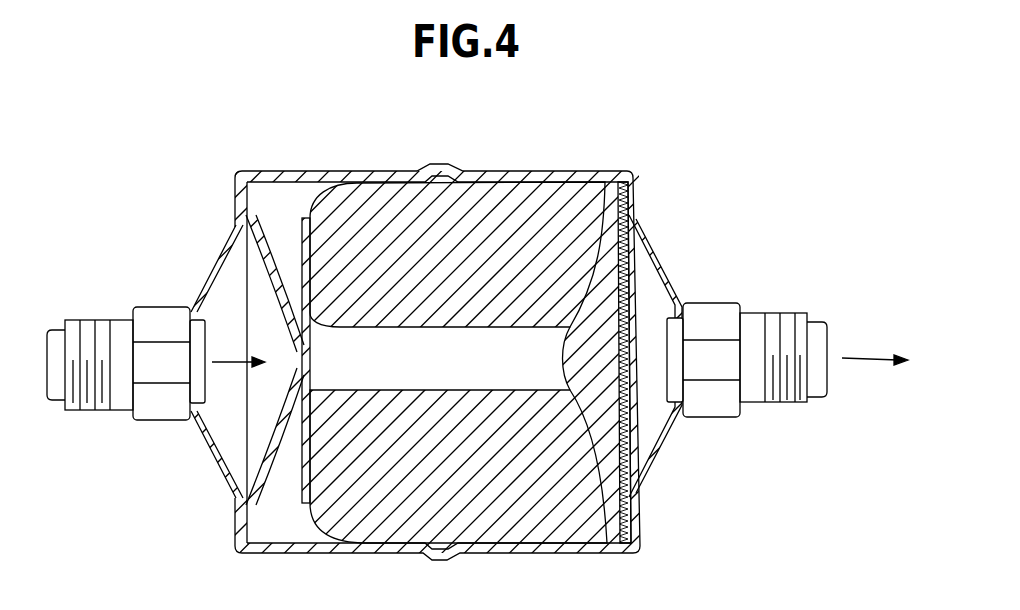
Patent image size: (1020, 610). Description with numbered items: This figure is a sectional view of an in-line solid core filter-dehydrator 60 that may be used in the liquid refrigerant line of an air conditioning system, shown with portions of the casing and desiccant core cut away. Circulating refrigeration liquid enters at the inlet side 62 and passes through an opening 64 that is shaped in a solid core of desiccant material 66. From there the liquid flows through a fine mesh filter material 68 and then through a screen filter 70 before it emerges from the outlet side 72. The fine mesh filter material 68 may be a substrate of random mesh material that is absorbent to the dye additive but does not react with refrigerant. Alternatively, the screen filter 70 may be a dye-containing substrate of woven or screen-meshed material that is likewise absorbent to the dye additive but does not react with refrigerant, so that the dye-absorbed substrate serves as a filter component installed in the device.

The in-line solid core filter-dehydrator 60 is at (440, 167).
The inlet side 62 is at (83, 320).
The opening 64 is at (280, 290).
The solid core of desiccant material 66 is at (373, 210).
The fine mesh filter material 68 is at (606, 274).
The screen filter 70 is at (627, 455).
The outlet side 72 is at (827, 337).